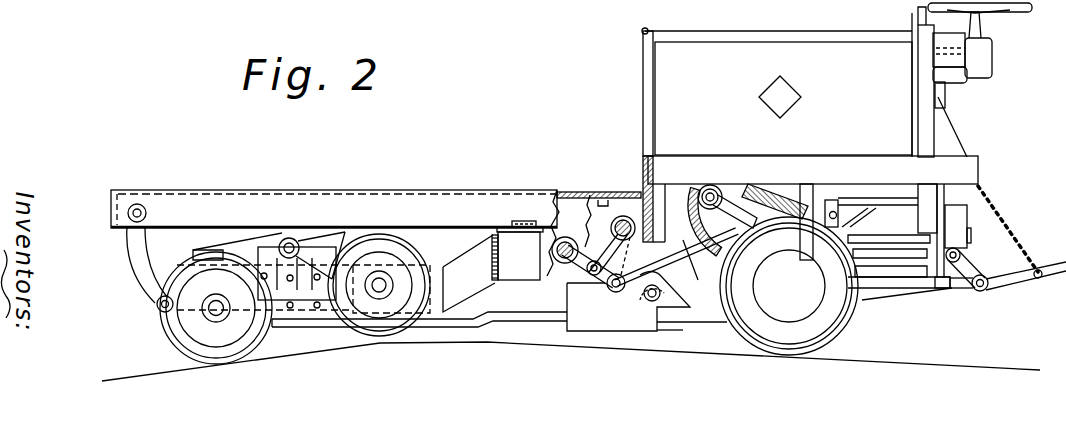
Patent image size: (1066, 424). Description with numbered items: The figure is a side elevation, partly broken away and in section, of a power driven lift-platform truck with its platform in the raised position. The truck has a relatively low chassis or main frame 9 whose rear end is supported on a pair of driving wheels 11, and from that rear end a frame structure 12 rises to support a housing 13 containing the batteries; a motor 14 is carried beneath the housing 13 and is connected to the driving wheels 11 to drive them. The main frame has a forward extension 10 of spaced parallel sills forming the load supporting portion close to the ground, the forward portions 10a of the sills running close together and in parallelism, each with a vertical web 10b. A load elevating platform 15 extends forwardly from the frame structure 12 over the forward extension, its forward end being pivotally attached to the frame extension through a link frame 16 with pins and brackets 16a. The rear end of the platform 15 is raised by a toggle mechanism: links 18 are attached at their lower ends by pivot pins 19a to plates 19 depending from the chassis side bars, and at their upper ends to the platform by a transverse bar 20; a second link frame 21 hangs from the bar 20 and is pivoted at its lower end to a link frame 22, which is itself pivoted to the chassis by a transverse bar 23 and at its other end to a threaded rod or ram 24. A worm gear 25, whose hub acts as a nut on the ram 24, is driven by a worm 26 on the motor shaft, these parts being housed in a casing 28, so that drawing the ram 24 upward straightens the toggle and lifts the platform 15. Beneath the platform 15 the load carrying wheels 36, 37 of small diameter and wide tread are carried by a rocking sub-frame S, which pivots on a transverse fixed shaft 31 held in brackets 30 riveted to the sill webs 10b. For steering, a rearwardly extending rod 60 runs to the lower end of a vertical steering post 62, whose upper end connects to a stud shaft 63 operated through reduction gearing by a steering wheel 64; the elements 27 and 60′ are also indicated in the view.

The chassis or main frame 9 is at (923, 213).
The forward extension 10 is at (550, 225).
The forward portions of the sills 10a is at (355, 300).
The vertical web 10b is at (523, 221).
The driving wheels 11 is at (826, 316).
The frame structure 12 is at (956, 124).
The housing or casing 13 is at (783, 98).
The motor 14 is at (918, 226).
The load elevating platform 15 is at (397, 204).
The link frame 16 is at (130, 266).
The pins and brackets 16a is at (141, 207).
The links 18 is at (632, 285).
The plates 19 is at (663, 307).
The pivot pins 19a is at (649, 301).
The transverse bar 20 is at (623, 216).
The second link frame 21 is at (585, 245).
The link frame 22 is at (560, 262).
The transverse bar 23 is at (558, 260).
The threaded rod or ram 24 is at (676, 258).
The worm gear 25 is at (706, 188).
The worm 26 is at (735, 185).
The lever 27 is at (1005, 283).
The casing 28 is at (762, 187).
The brackets 30 is at (312, 267).
The transverse fixed shaft 31 is at (292, 240).
The load carrying wheel 36 is at (217, 343).
The load carrying wheel 37 is at (360, 303).
The rearwardly extending rod 60 is at (498, 318).
The skid block 60′ is at (470, 257).
The steering post 62 is at (946, 95).
The stud shaft 63 is at (988, 62).
The steering wheel 64 is at (1008, 7).
The rocking sub-frame S is at (240, 253).